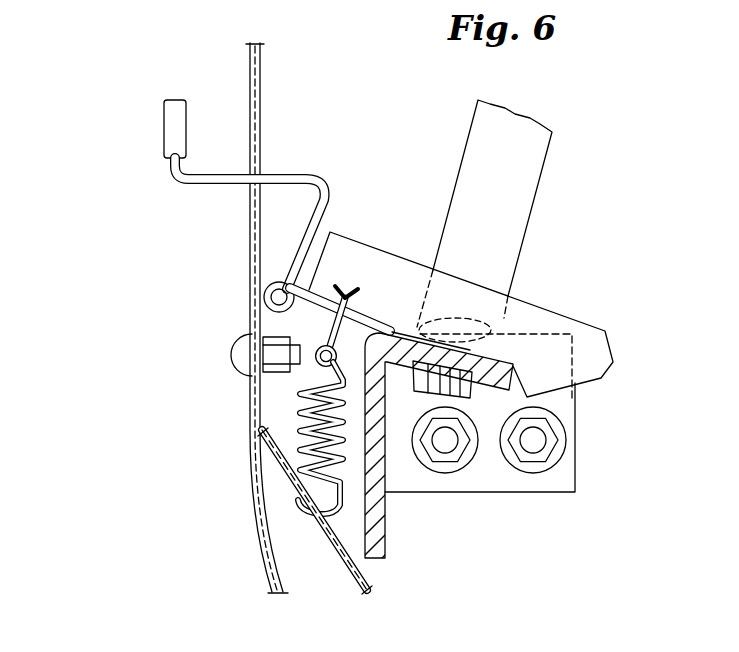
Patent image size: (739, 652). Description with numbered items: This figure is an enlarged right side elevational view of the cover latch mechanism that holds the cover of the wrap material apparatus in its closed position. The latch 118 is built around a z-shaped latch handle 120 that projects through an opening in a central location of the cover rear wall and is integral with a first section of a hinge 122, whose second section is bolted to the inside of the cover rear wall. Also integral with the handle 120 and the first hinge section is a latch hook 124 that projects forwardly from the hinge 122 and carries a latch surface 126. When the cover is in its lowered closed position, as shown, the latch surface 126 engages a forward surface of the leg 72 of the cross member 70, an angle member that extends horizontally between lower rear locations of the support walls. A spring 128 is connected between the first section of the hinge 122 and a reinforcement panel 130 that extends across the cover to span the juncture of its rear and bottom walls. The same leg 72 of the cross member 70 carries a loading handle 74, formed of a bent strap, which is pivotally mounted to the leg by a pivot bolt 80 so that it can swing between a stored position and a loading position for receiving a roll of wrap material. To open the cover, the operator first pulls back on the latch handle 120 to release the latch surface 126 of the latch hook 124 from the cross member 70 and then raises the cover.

The cross member 70 is at (395, 514).
The leg 72 is at (507, 377).
The loading handle 74 is at (548, 166).
The pivot bolt 80 is at (458, 400).
The latch 118 is at (216, 353).
The latch handle 120 is at (182, 163).
The hinge 122 is at (279, 282).
The latch hook 124 is at (388, 252).
The latch surface 126 is at (522, 378).
The spring 128 is at (297, 440).
The reinforcement panel 130 is at (347, 563).